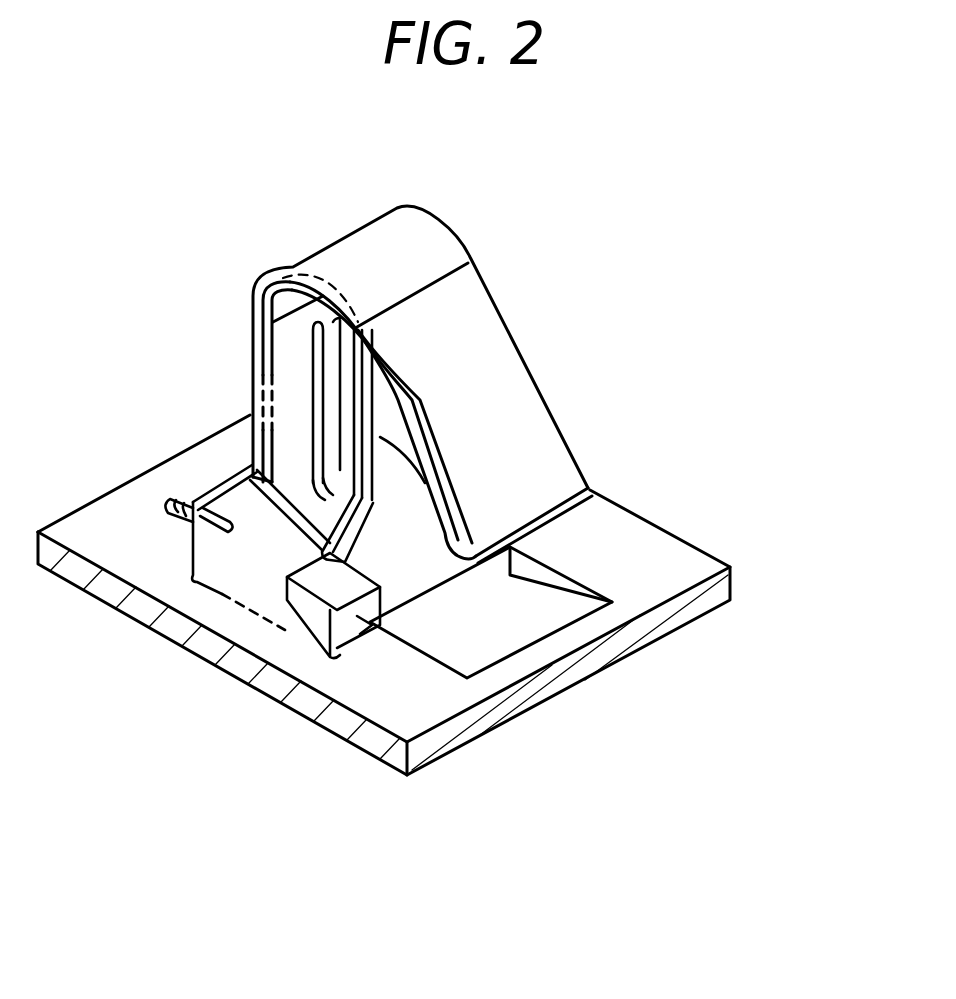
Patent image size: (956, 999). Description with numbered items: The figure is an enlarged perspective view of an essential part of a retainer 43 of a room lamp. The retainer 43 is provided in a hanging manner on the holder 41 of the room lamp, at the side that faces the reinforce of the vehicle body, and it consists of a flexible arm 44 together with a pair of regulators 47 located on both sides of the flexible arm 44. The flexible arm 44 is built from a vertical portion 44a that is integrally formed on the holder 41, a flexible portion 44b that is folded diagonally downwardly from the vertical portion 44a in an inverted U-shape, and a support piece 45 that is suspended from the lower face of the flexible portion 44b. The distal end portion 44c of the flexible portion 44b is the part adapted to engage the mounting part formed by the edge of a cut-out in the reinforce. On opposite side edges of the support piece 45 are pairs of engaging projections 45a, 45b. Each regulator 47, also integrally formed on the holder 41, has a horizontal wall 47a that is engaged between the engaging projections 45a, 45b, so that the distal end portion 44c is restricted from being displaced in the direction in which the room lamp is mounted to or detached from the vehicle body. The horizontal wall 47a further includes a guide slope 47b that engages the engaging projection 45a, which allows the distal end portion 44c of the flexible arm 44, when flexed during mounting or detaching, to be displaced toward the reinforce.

The holder 41 is at (650, 662).
The retainer 43 is at (378, 542).
The flexible arm 44 is at (421, 384).
The vertical portion 44a is at (288, 350).
The flexible portion 44b is at (527, 433).
The distal end portion 44c is at (491, 612).
The support piece 45 is at (435, 561).
The engaging projection 45a is at (362, 566).
The engaging projection 45b is at (372, 630).
The regulator 47 is at (211, 631).
The horizontal wall 47a is at (332, 625).
The guide slope 47b is at (278, 541).